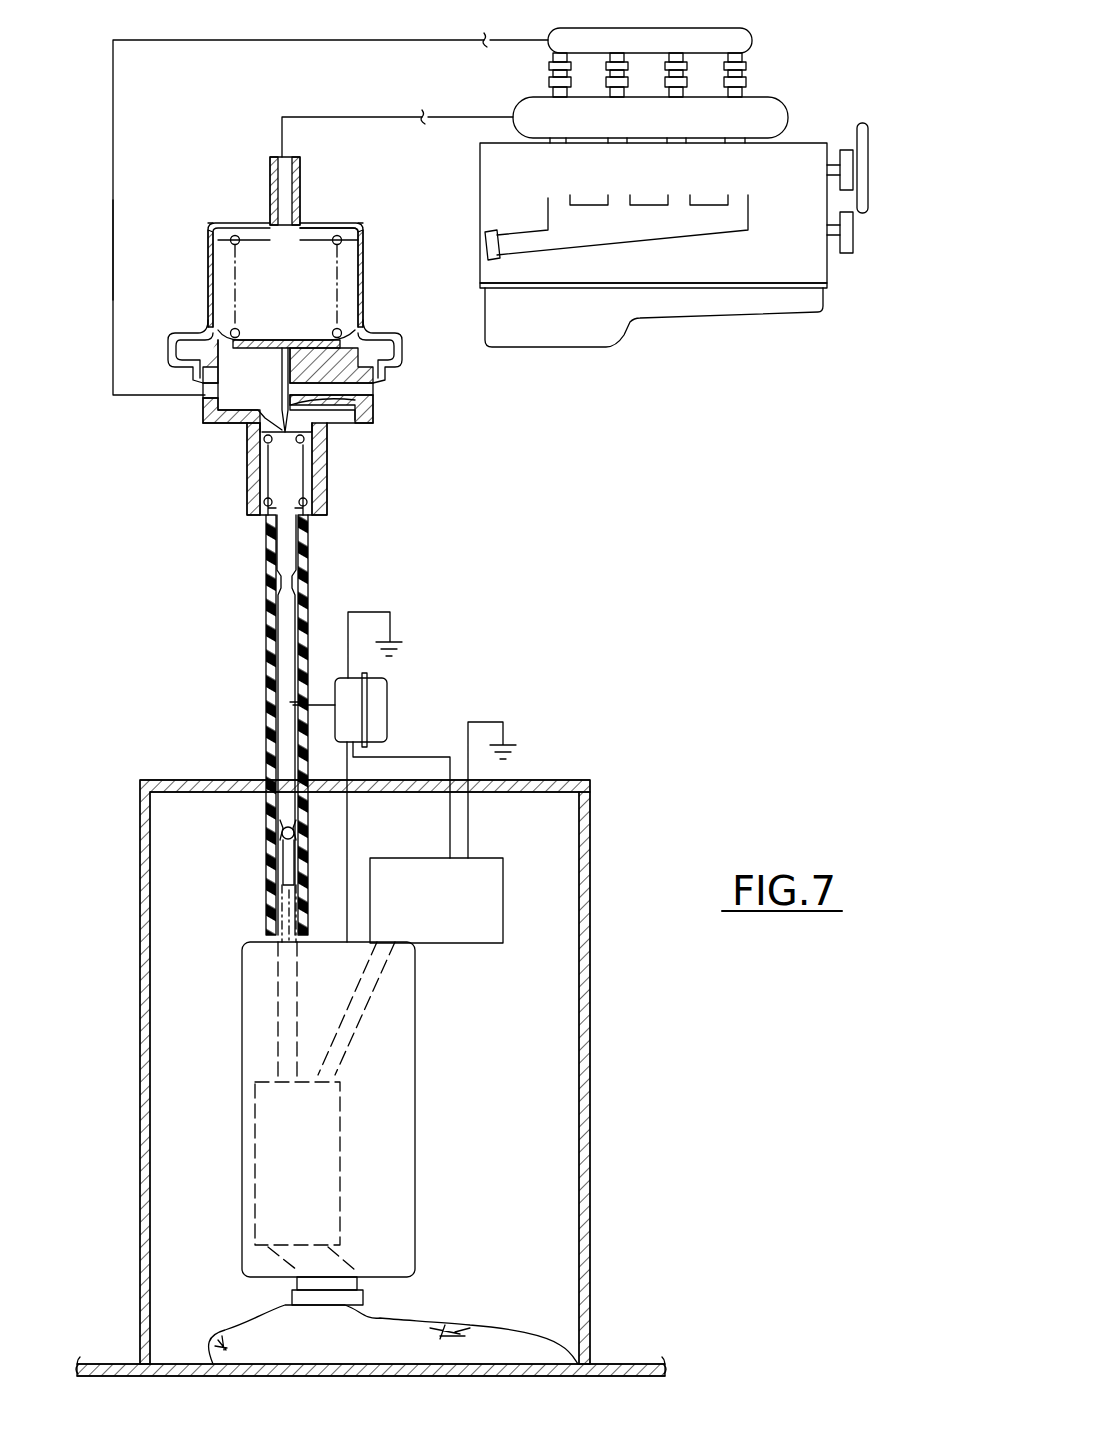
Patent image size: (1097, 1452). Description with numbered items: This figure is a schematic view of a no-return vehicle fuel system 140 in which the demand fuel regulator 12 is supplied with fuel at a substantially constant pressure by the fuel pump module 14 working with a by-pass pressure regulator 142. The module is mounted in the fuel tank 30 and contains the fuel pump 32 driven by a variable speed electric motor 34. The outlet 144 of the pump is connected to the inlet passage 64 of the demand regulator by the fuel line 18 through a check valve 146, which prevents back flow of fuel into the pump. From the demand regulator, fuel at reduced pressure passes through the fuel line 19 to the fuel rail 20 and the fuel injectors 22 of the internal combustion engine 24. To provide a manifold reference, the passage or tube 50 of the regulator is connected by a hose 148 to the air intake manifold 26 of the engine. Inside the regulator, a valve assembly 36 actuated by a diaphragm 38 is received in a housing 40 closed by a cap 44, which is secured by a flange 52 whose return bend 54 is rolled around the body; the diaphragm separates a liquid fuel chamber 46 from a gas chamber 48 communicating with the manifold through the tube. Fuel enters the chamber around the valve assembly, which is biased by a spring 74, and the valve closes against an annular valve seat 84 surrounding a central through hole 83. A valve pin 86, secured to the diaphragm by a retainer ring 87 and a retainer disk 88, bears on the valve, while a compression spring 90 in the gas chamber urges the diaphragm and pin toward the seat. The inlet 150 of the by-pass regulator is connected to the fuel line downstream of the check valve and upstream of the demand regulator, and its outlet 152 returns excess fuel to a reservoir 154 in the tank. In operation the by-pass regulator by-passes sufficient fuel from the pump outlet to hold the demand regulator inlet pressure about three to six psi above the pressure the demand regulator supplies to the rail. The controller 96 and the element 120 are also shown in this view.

The demand fuel regulator 12 is at (188, 432).
The fuel pump module 14 is at (244, 978).
The fuel line 18 is at (266, 622).
The fuel line 19 is at (112, 240).
The fuel rail 20 is at (752, 37).
The fuel injectors 22 is at (549, 72).
The internal combustion engine 24 is at (652, 352).
The air intake manifold 26 is at (777, 101).
The fuel tank 30 is at (613, 1360).
The fuel pump 32 is at (262, 1198).
The electric motor 34 is at (335, 1102).
The valve assembly 36 is at (262, 432).
The diaphragm 38 is at (360, 318).
The housing 40 is at (330, 462).
The cap 44 is at (208, 228).
The liquid fuel chamber 46 is at (250, 390).
The gas chamber 48 is at (213, 265).
The passage or tube 50 is at (270, 180).
The flange 52 is at (170, 340).
The return bend 54 is at (172, 370).
The inlet passage 64 is at (286, 553).
The spring 74 is at (303, 488).
The central through hole 83 is at (345, 406).
The annular valve seat 84 is at (440, 1328).
The valve pin 86 is at (373, 389).
The retainer ring 87 is at (290, 340).
The retainer disk 88 is at (276, 356).
The compression spring 90 is at (363, 230).
The PWM controller 96 is at (490, 858).
The spring chamber 120 is at (296, 262).
The no-return vehicle fuel system 140 is at (284, 26).
The by-pass pressure regulator 142 is at (390, 690).
The outlet 144 is at (285, 864).
The check valve 146 is at (281, 832).
The hose 148 is at (332, 117).
The inlet 150 is at (296, 711).
The outlet 152 is at (355, 832).
The reservoir 154 is at (593, 1082).